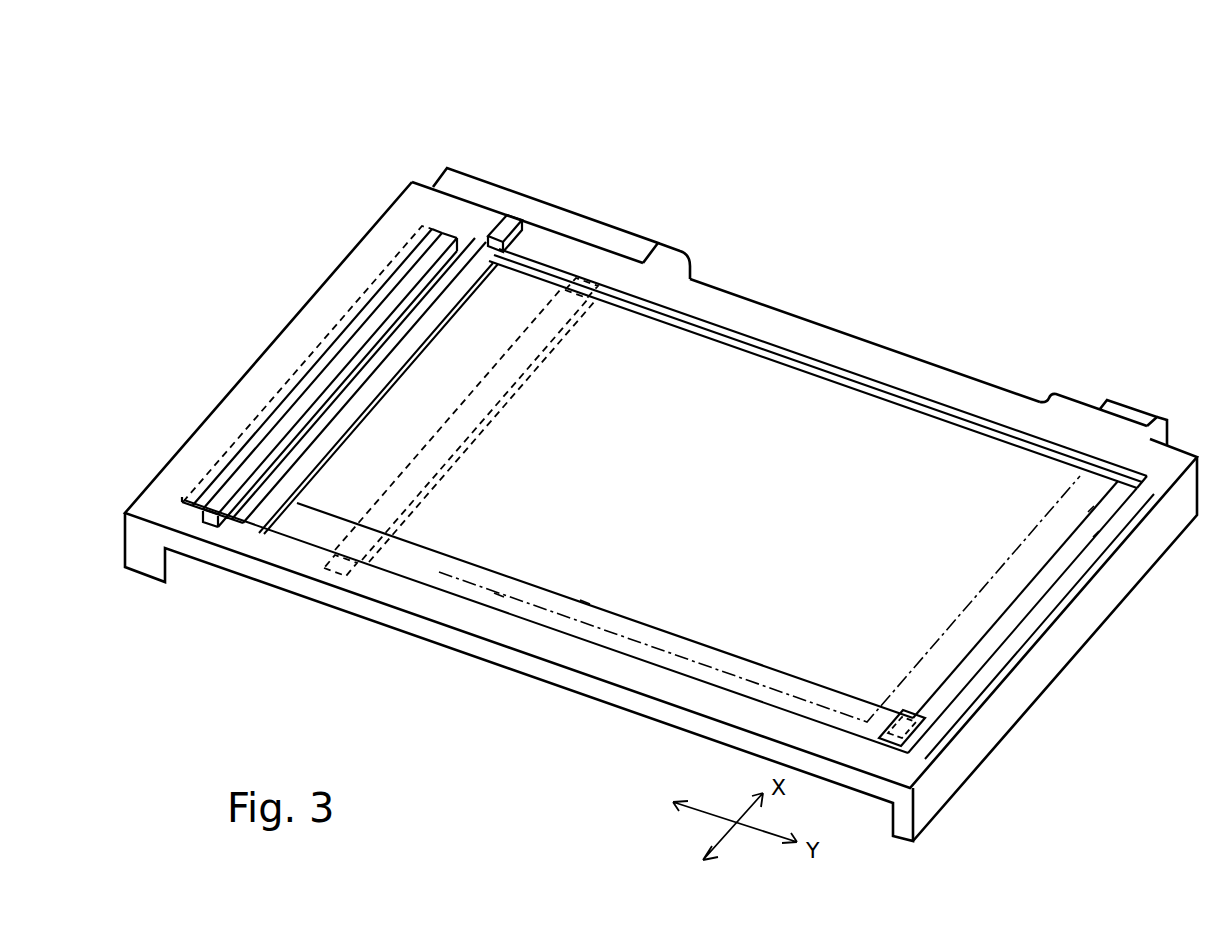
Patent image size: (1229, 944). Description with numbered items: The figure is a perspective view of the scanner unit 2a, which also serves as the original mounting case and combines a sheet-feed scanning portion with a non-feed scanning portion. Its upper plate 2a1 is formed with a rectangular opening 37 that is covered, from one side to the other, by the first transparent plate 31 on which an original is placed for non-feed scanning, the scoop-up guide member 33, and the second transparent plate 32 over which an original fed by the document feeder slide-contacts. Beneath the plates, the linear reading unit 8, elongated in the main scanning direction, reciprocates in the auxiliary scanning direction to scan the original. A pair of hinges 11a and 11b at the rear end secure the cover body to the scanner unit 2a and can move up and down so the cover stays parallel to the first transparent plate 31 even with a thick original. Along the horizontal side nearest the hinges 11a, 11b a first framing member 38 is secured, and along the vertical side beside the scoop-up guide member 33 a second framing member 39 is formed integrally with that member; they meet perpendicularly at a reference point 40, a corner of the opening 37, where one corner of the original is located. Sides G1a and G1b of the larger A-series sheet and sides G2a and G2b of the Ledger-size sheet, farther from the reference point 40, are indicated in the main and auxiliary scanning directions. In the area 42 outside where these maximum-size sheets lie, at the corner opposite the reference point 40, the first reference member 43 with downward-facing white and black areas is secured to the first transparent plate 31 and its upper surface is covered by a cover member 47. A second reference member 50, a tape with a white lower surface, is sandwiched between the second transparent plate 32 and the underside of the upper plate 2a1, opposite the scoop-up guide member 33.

The scanner unit 2a is at (946, 362).
The upper plate 2a1 is at (1013, 405).
The reading unit 8 is at (375, 505).
The hinge 11a is at (585, 230).
The hinge 11b is at (1127, 413).
The first transparent plate 31 is at (737, 395).
The second transparent plate 32 is at (368, 345).
The scoop-up guide member 33 is at (326, 420).
The rectangular opening 37 is at (830, 396).
The first framing member 38 is at (705, 332).
The second framing member 39 is at (448, 290).
The reference point 40 is at (505, 228).
The area 42 is at (990, 645).
The first reference member 43 is at (900, 707).
The cover member 47 is at (927, 747).
The second reference member 50 is at (253, 420).
The side of A3 original sheet G1a is at (1095, 537).
The side of A3 original sheet G1b is at (497, 593).
The side of Ledger-size original sheet G2a is at (1090, 512).
The side of Ledger-size original sheet G2b is at (583, 600).